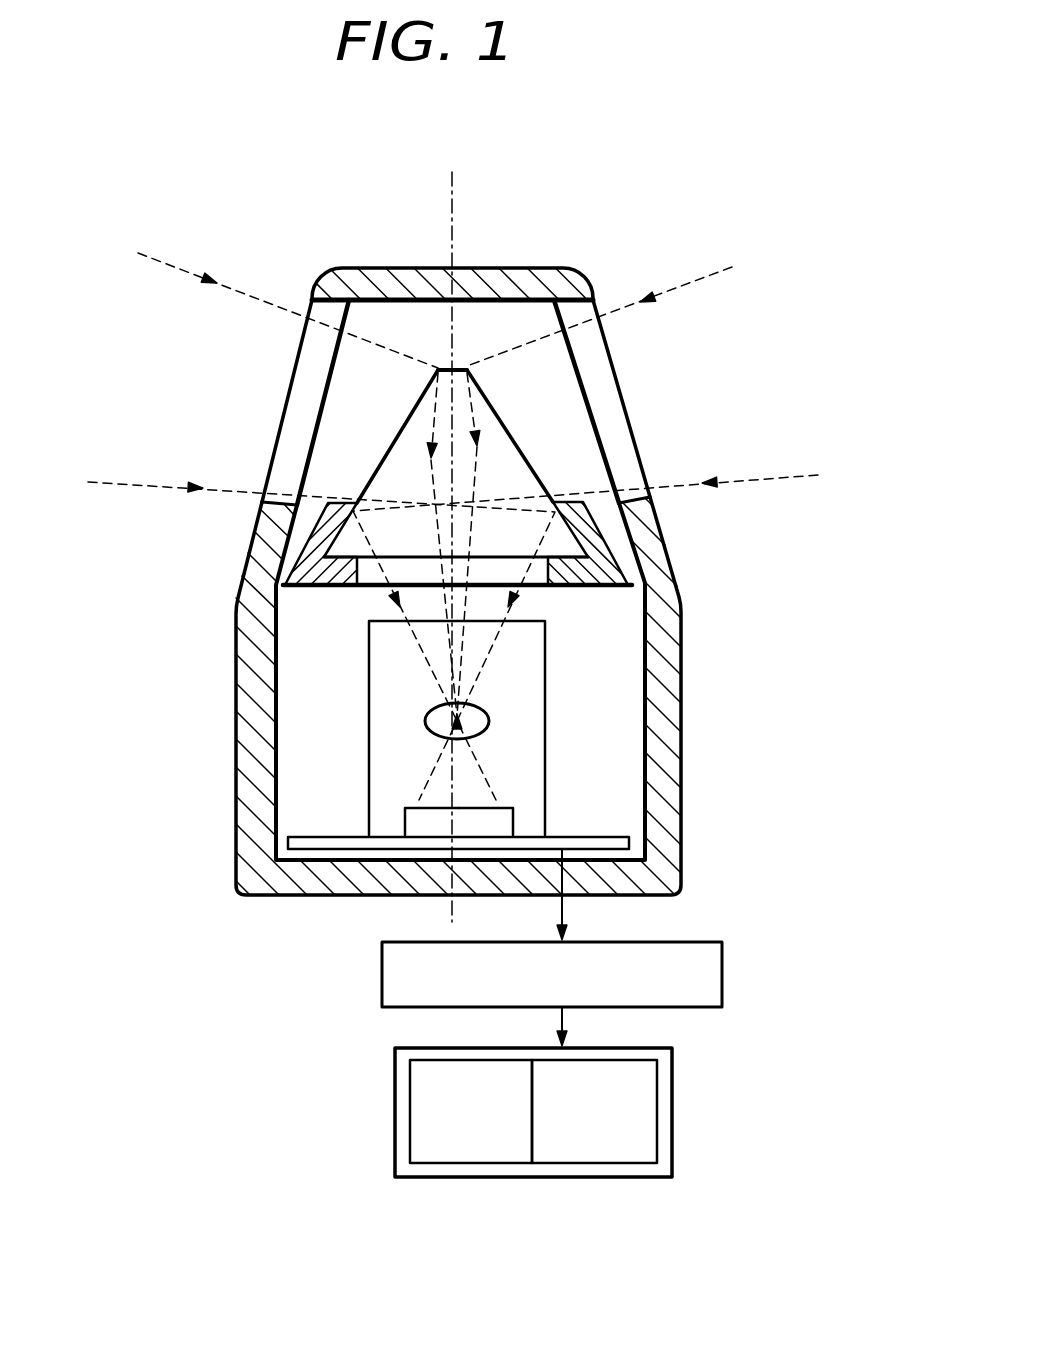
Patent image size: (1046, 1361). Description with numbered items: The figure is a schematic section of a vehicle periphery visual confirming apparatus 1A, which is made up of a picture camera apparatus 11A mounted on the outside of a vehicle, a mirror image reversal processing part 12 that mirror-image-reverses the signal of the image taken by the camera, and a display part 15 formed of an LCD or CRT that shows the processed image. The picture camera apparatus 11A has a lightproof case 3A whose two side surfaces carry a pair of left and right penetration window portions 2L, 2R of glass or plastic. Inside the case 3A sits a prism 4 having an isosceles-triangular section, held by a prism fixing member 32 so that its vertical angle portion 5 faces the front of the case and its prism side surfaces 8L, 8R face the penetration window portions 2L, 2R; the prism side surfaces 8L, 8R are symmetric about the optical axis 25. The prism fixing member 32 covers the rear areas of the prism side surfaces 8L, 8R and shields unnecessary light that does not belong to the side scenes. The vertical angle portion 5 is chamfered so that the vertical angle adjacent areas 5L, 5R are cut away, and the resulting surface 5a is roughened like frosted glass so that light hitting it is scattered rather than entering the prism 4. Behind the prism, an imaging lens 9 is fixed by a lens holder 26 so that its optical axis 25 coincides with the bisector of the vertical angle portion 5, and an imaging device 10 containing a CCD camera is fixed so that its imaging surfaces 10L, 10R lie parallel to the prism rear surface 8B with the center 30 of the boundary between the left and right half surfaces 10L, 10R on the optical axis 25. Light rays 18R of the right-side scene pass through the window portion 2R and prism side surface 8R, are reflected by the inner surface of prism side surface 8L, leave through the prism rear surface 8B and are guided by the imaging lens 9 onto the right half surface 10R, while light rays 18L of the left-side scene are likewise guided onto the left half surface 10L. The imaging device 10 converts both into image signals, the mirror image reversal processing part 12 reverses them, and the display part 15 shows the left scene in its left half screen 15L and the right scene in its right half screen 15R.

The vehicle periphery visual confirming apparatus 1A is at (135, 230).
The picture camera apparatus 11A is at (588, 263).
The left penetration window portion 2L is at (292, 423).
The right penetration window portion 2R is at (613, 407).
The lightproof case 3A is at (702, 730).
The prism 4 is at (460, 364).
The vertical angle portion 5 is at (442, 342).
The left vertical angle adjacent area 5L is at (438, 368).
The right vertical angle adjacent area 5R is at (467, 367).
The chamfered surface 5a is at (467, 370).
The left prism side surface 8L is at (377, 467).
The right prism side surface 8R is at (526, 457).
The prism rear surface 8B is at (550, 585).
The imaging lens 9 is at (488, 713).
The imaging device 10 is at (525, 846).
The left half surface of the imaging surface 10L is at (405, 808).
The right half surface of the imaging surface 10R is at (513, 808).
The mirror image reversal processing part 12 is at (722, 944).
The display part 15 is at (588, 1153).
The left half screen 15L is at (442, 1165).
The right half screen 15R is at (630, 1165).
The light rays corresponding to the left-side scene 18L is at (170, 265).
The light rays corresponding to the right-side scene 18R is at (697, 280).
The optical axis 25 is at (452, 183).
The lens holder 26 is at (545, 670).
The center of the boundary line 30 is at (457, 808).
The prism fixing member 32 is at (612, 557).